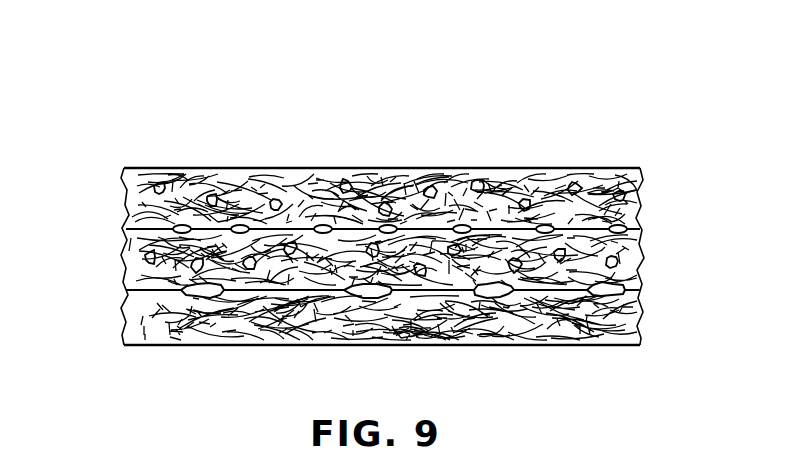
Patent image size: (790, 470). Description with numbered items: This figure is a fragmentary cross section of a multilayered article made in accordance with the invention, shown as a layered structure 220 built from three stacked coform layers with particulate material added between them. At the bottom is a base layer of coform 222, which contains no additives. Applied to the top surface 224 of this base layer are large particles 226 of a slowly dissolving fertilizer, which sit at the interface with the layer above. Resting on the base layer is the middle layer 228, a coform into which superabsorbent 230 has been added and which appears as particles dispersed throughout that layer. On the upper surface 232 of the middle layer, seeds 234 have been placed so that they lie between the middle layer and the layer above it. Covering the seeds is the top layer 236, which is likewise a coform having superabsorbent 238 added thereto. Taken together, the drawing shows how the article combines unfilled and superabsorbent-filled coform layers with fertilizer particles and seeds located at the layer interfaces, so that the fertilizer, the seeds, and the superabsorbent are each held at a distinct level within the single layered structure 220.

The layered structure 220 is at (263, 101).
The base layer of coform 222 is at (640, 326).
The top surface 224 is at (127, 284).
The large particles 226 is at (640, 296).
The middle layer 228 is at (640, 255).
The superabsorbent 230 is at (132, 261).
The surface 232 is at (130, 215).
The seeds 234 is at (628, 228).
The top layer 236 is at (640, 194).
The superabsorbent 238 is at (158, 183).